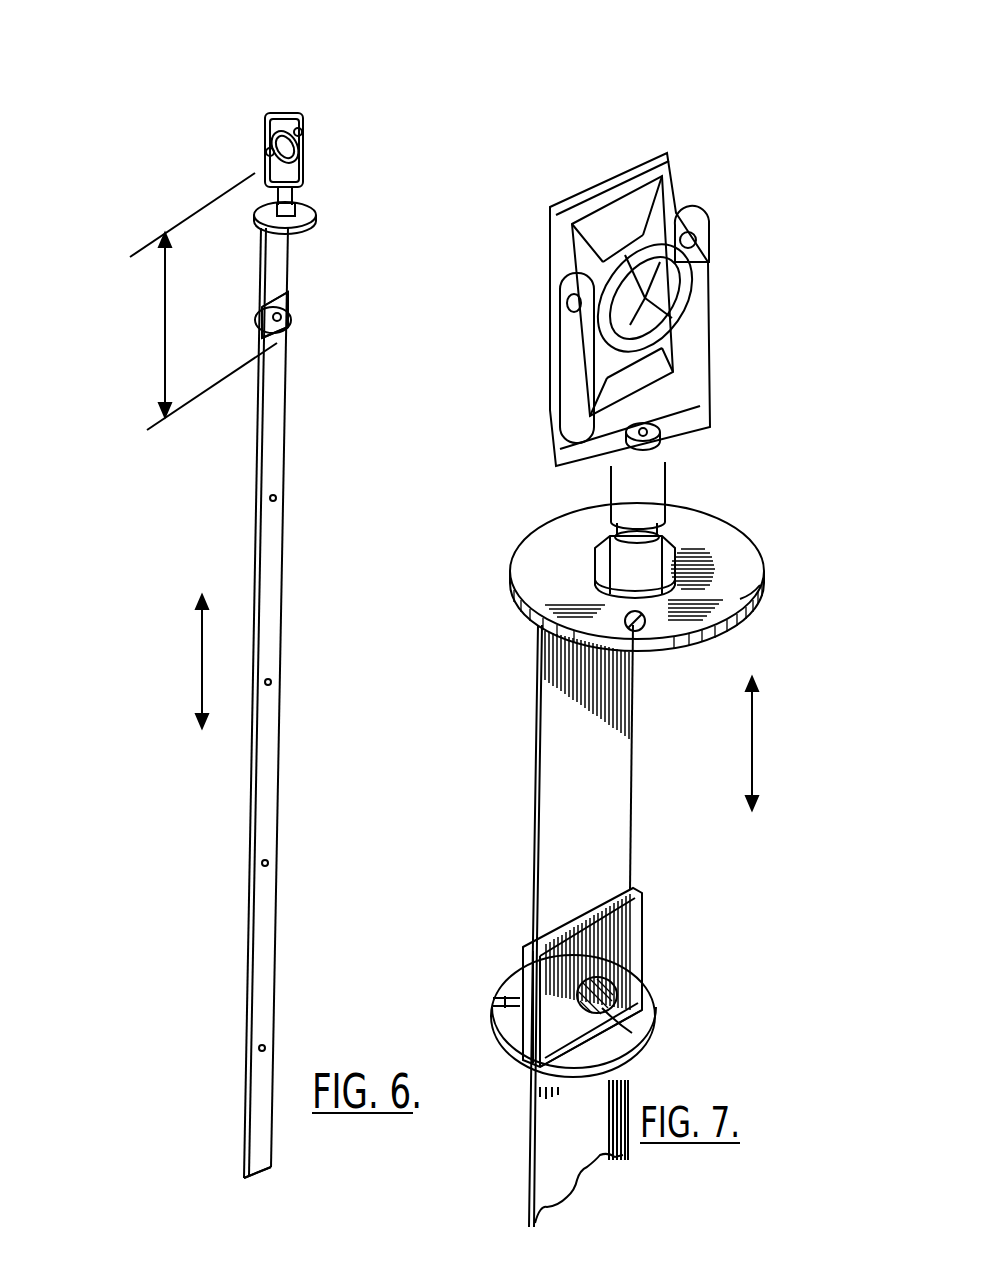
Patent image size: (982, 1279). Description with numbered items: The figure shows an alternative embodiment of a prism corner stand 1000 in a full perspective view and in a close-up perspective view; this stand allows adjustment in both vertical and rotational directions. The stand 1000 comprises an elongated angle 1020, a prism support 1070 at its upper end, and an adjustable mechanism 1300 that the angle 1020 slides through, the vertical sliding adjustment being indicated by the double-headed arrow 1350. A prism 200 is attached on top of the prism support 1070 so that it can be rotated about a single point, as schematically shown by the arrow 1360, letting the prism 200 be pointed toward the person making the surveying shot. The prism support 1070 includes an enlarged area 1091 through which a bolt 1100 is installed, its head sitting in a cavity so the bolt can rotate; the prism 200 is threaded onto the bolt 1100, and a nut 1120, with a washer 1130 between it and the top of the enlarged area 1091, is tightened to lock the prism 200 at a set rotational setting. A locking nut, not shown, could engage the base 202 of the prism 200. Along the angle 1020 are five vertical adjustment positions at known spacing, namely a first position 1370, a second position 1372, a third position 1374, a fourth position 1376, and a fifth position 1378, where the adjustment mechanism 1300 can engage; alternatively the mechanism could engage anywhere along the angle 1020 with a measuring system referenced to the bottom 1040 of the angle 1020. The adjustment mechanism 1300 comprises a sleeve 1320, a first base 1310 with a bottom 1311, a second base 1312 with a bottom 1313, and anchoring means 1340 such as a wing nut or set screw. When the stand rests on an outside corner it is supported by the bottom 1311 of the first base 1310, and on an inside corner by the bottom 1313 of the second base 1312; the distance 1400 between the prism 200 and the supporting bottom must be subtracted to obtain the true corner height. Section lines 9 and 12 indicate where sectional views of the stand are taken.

In FIG. 6, the prism 200 is at (300, 118).
In FIG. 7, the prism 200 is at (653, 293).
In FIG. 7, the base of prism 202 is at (610, 500).
In FIG. 6, the prism corner stand 1000 is at (93, 635).
In FIG. 6, the angle 1020 is at (296, 561).
In FIG. 7, the angle 1020 is at (607, 797).
In FIG. 6, the bottom of angle 1040 is at (255, 1178).
In FIG. 6, the prism support 1070 is at (312, 208).
In FIG. 7, the prism support 1070 is at (738, 575).
In FIG. 7, the enlarged area 1091 is at (757, 598).
In FIG. 7, the bolt 1100 is at (663, 510).
In FIG. 7, the nut 1120 is at (610, 540).
In FIG. 7, the washer 1130 is at (597, 570).
In FIG. 6, the adjustable mechanism 1300 is at (292, 320).
In FIG. 7, the adjustable mechanism 1300 is at (707, 1040).
In FIG. 6, the first base 1310 is at (255, 322).
In FIG. 7, the first base 1310 is at (490, 1047).
In FIG. 7, the bottom of first base 1311 is at (500, 1037).
In FIG. 6, the second base 1312 is at (285, 335).
In FIG. 7, the second base 1312 is at (643, 1077).
In FIG. 7, the bottom of second base 1313 is at (660, 1037).
In FIG. 7, the sleeve 1320 is at (557, 940).
In FIG. 7, the anchoring means 1340 is at (602, 1008).
In FIG. 6, the vertical adjustment direction 1350 is at (201, 682).
In FIG. 7, the vertical adjustment direction 1350 is at (753, 735).
In FIG. 7, the arrow 1360 is at (675, 113).
In FIG. 6, the first position 1370 is at (288, 300).
In FIG. 6, the second position 1372 is at (276, 495).
In FIG. 6, the third position 1374 is at (271, 679).
In FIG. 6, the fourth position 1376 is at (268, 860).
In FIG. 6, the fifth position 1378 is at (265, 1045).
In FIG. 6, the distance 1400 is at (161, 328).
In FIG. 7, the section line 9- 9 is at (643, 863).
In FIG. 7, the section line 12- 12 is at (750, 523).